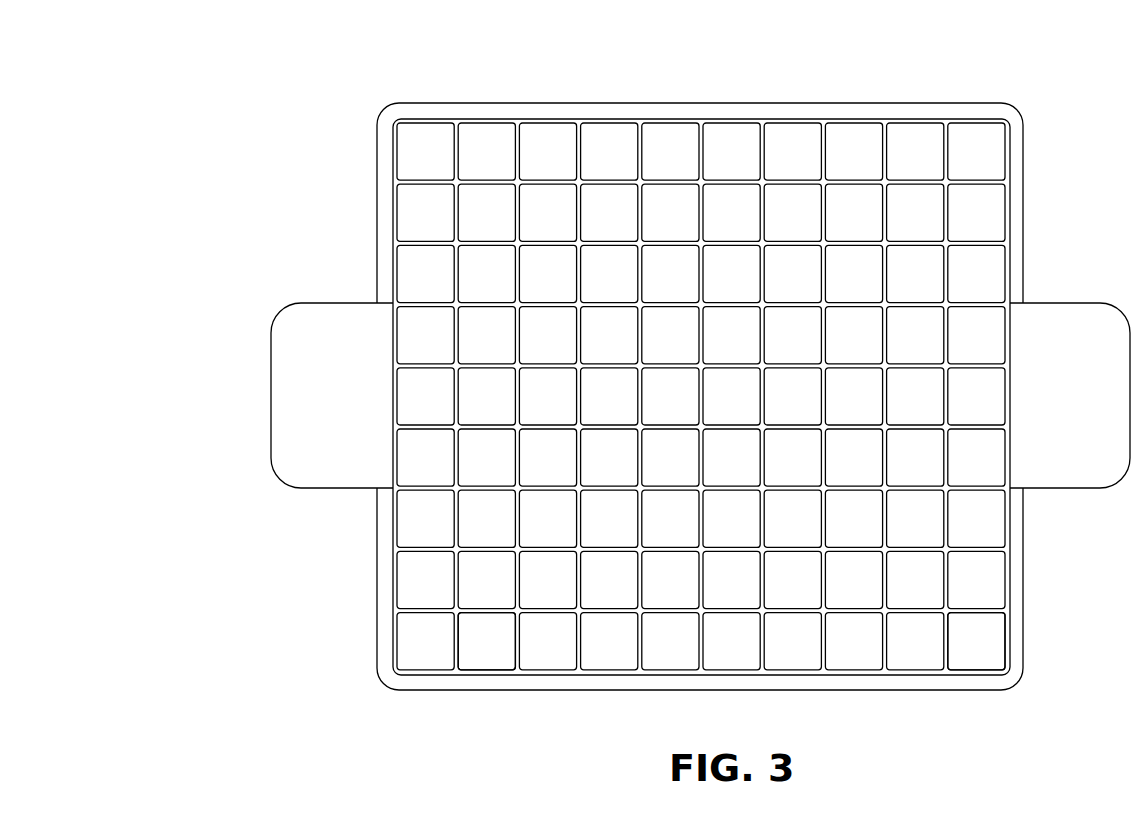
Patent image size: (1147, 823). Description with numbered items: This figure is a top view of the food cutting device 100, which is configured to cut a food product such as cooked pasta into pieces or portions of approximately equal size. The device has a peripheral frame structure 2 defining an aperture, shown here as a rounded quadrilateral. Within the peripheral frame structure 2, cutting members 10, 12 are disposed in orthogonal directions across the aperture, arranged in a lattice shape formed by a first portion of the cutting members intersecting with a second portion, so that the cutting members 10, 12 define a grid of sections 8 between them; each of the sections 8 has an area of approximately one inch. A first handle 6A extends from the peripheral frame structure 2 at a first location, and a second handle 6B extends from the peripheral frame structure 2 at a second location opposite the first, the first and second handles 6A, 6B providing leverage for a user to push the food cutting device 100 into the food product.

The food cutting device 100 is at (652, 374).
The peripheral frame structure 2 is at (838, 100).
The cutting member 12 is at (464, 156).
The cutting member 10 is at (481, 616).
The section 8 is at (959, 635).
The first handle 6A is at (255, 362).
The second handle 6B is at (1066, 456).